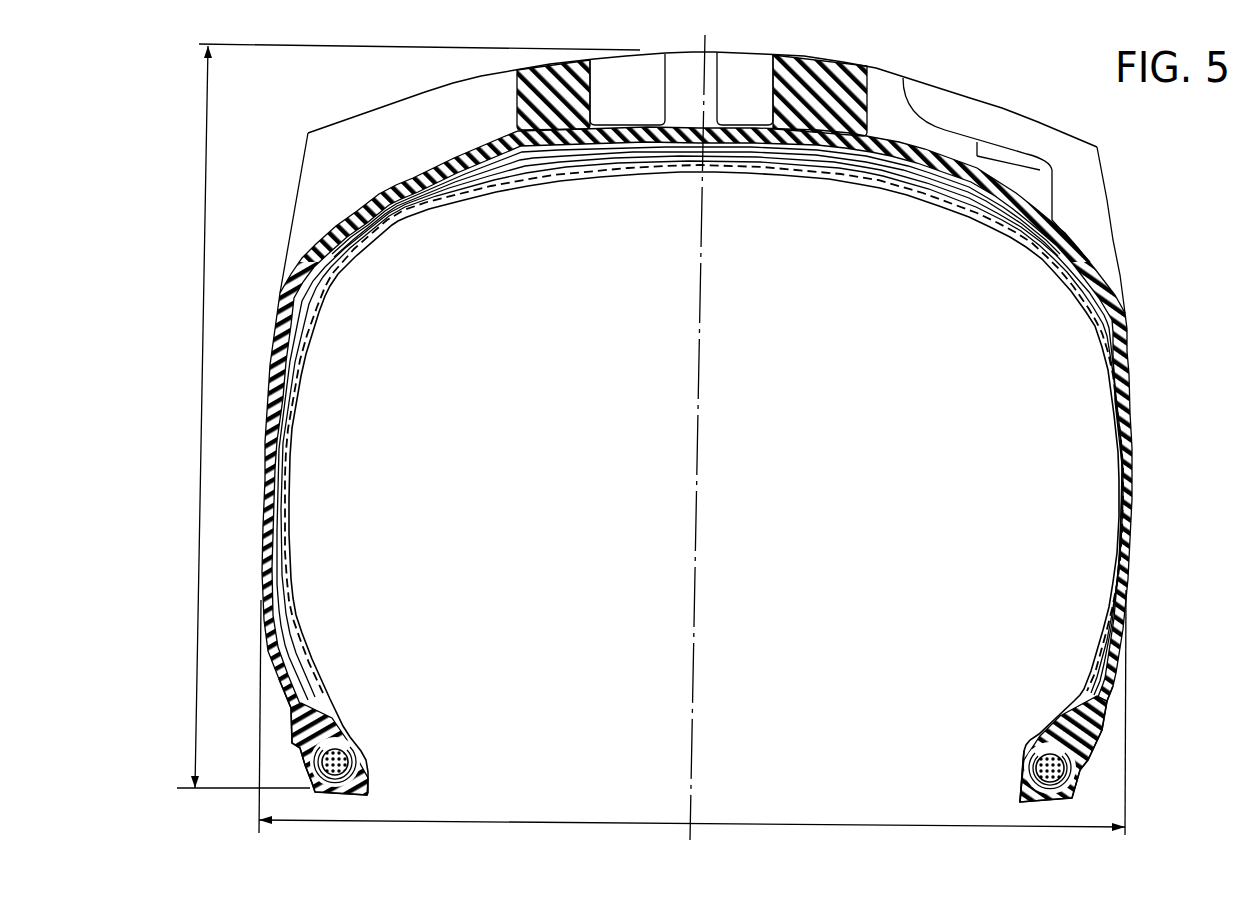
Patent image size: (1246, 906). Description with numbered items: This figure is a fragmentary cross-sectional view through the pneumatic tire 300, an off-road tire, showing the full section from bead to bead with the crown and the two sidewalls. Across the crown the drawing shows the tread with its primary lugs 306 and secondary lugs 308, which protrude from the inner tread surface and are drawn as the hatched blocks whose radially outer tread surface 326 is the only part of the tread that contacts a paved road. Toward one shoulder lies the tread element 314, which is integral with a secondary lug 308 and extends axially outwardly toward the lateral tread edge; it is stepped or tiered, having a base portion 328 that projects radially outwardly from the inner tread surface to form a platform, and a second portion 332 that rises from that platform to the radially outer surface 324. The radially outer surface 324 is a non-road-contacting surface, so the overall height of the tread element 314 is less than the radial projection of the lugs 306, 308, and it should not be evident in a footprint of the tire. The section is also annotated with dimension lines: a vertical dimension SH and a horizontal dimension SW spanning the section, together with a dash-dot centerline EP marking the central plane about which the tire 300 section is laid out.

The pneumatic tire 300 is at (992, 70).
The primary lugs 306 is at (443, 82).
The secondary lugs 308 is at (870, 60).
The radially outer tread surface 326 is at (677, 50).
The tread element 314 is at (988, 126).
The radially outer surface 324 is at (1030, 160).
The second portion 332 is at (1040, 164).
The base portion 328 is at (1028, 188).
The section height SH is at (201, 458).
The section width SW is at (538, 820).
The equatorial plane EP is at (699, 498).